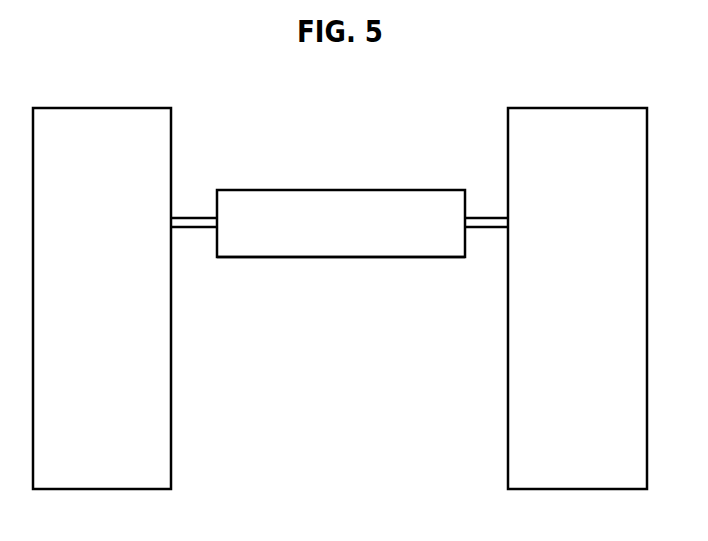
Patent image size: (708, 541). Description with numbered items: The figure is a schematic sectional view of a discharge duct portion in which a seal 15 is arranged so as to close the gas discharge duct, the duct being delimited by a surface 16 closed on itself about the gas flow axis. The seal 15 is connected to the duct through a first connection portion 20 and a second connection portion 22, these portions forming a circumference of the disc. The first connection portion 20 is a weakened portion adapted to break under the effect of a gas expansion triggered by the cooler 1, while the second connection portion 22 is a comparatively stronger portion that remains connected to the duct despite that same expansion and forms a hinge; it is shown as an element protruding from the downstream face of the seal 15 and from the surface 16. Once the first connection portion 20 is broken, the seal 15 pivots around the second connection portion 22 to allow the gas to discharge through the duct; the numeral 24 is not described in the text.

The cooler 1 is at (577, 108).
The seal 15 is at (339, 187).
The surface 16 is at (172, 298).
The first connection portion 20 is at (195, 218).
The second connection portion 22 is at (378, 240).
The housing wall of connecting module 24 is at (344, 257).